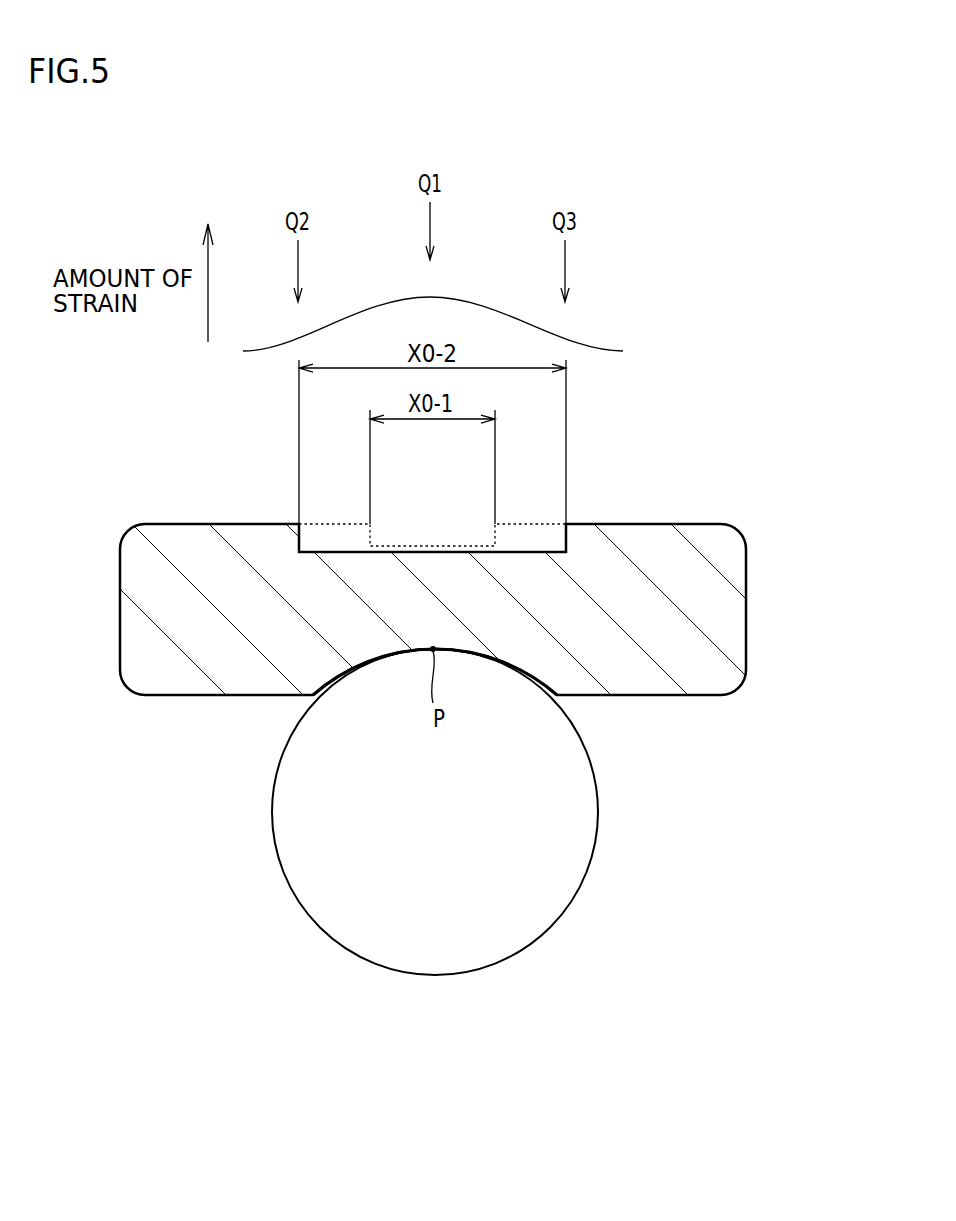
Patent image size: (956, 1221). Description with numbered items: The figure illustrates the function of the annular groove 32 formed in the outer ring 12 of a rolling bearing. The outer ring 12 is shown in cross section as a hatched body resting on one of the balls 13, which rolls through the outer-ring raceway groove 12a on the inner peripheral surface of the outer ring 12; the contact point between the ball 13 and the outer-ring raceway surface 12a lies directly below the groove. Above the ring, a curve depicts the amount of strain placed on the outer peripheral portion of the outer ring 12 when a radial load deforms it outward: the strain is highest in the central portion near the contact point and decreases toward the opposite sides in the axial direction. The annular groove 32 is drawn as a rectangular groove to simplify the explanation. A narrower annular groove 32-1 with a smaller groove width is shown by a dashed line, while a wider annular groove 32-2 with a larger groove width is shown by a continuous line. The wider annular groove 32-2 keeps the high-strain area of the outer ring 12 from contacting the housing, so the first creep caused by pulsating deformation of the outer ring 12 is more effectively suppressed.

The outer ring 12 is at (730, 598).
The outer-ring raceway groove 12a is at (375, 663).
The balls 13 is at (523, 950).
The annular groove 32 is at (465, 518).
The annular groove (dashed-line example) 32-1 is at (397, 547).
The annular groove (continuous-line example) 32-2 is at (323, 552).